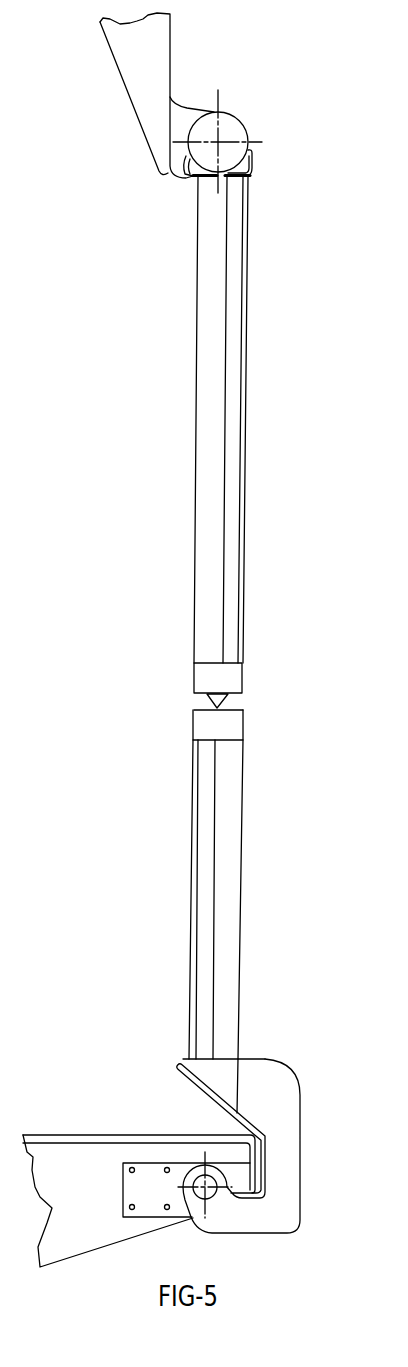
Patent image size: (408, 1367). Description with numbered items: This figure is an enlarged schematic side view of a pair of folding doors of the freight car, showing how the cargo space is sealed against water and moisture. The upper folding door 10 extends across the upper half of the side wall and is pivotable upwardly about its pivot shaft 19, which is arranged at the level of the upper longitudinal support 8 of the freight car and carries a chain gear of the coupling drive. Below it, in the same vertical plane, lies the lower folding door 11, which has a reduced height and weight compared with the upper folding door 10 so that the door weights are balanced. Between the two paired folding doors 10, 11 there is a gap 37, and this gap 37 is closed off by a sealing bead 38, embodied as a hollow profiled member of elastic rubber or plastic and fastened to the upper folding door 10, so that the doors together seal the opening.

The longitudinal support 8 is at (130, 78).
The pivot shaft 19 is at (230, 125).
The upper folding door 10 is at (254, 386).
The lower folding door 11 is at (248, 913).
The gap 37 is at (188, 704).
The sealing bead 38 is at (234, 702).